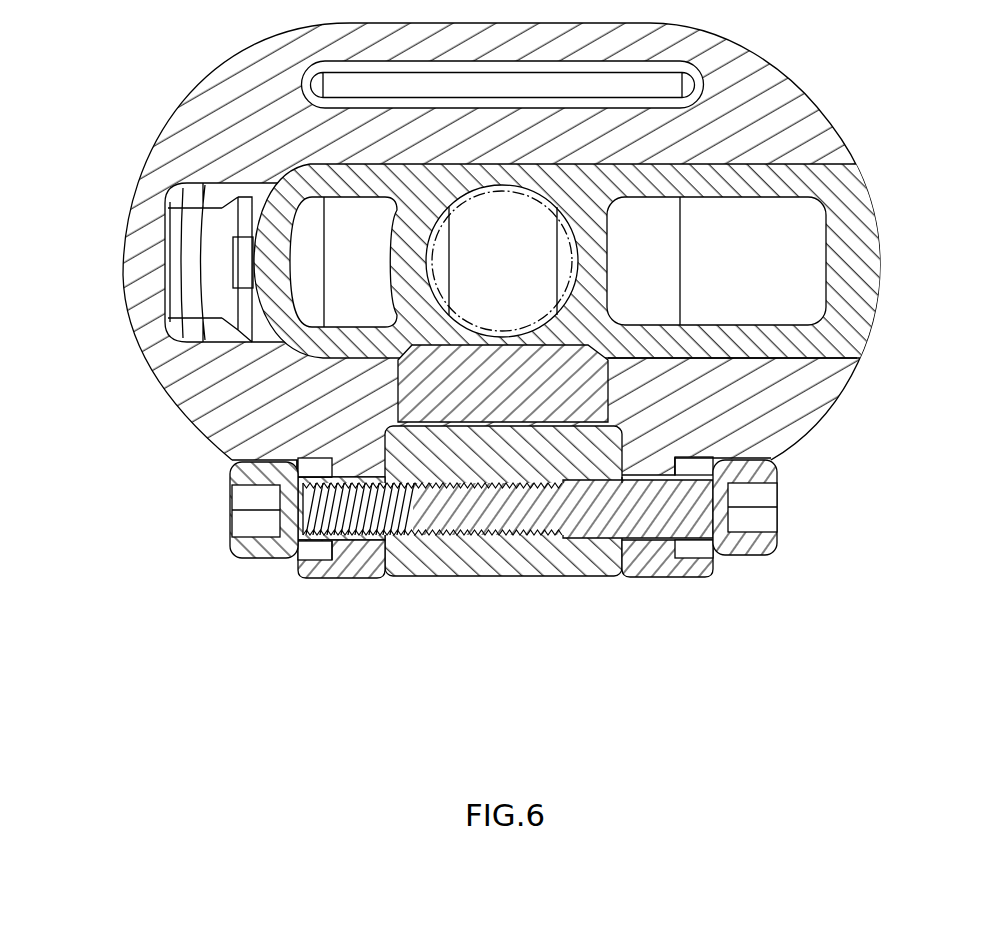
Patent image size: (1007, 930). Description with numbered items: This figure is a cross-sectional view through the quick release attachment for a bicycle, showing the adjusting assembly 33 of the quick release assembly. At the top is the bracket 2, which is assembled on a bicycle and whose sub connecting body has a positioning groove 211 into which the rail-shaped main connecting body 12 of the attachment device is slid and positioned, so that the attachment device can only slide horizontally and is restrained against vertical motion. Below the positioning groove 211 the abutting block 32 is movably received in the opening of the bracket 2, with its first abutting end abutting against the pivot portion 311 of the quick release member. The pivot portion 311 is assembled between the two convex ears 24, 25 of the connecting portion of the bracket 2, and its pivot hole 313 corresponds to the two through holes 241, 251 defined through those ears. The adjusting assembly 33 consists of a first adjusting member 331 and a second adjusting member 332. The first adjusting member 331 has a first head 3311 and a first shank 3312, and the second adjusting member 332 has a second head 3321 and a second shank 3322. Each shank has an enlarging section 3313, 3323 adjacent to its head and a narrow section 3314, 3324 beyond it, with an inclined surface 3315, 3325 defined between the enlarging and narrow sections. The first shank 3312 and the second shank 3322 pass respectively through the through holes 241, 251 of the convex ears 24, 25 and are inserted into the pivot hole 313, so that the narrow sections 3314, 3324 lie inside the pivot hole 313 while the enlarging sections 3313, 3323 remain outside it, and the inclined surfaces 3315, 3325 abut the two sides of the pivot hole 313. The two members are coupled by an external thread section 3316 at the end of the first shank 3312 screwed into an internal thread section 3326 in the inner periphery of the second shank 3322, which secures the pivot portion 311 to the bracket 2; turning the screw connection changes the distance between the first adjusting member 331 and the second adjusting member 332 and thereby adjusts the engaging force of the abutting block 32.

The bracket 2 is at (822, 119).
The main connecting body 12 is at (863, 297).
The positioning groove 211 is at (840, 341).
The abutting block 32 is at (640, 378).
The pivot portion 311 is at (640, 432).
The adjusting assembly 33 is at (520, 622).
The first adjusting member 331 is at (701, 599).
The second adjusting member 332 is at (328, 601).
The first head 3311 is at (773, 576).
The first shank 3312 is at (641, 585).
The enlarging section 3313 is at (655, 560).
The narrow section 3314 is at (596, 561).
The inclined surface 3315 is at (640, 560).
The pivot hole 313 is at (508, 559).
The external thread section 3316 is at (437, 540).
The second head 3321 is at (253, 578).
The second shank 3322 is at (373, 585).
The enlarging section 3323 is at (355, 545).
The narrow section 3324 is at (448, 545).
The inclined surface 3325 is at (380, 545).
The internal thread section 3326 is at (292, 558).
The convex ear 24 is at (332, 541).
The through hole 241 is at (340, 562).
The convex ear 25 is at (685, 560).
The through hole 251 is at (700, 560).